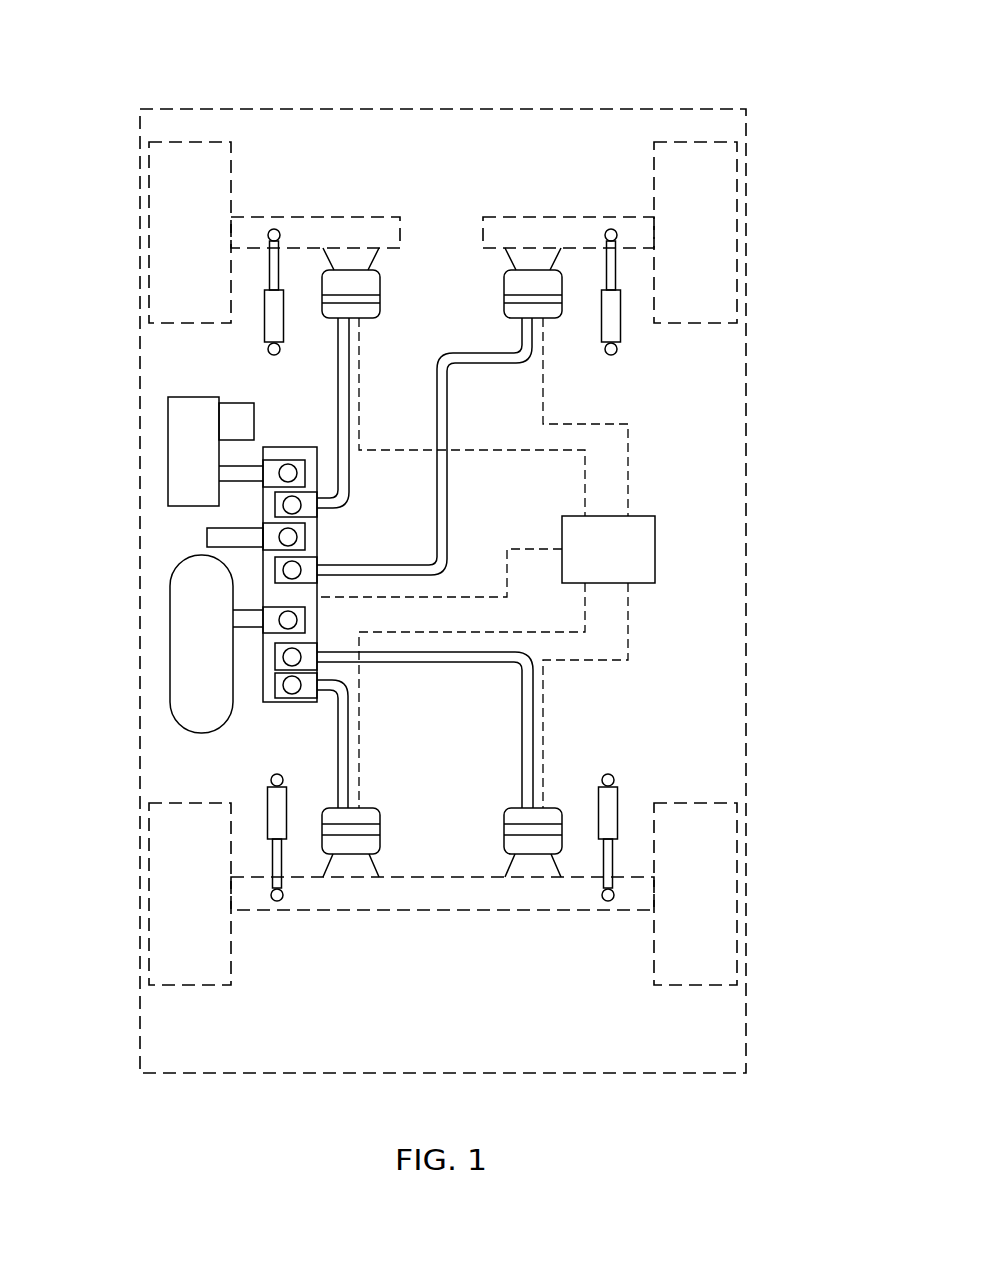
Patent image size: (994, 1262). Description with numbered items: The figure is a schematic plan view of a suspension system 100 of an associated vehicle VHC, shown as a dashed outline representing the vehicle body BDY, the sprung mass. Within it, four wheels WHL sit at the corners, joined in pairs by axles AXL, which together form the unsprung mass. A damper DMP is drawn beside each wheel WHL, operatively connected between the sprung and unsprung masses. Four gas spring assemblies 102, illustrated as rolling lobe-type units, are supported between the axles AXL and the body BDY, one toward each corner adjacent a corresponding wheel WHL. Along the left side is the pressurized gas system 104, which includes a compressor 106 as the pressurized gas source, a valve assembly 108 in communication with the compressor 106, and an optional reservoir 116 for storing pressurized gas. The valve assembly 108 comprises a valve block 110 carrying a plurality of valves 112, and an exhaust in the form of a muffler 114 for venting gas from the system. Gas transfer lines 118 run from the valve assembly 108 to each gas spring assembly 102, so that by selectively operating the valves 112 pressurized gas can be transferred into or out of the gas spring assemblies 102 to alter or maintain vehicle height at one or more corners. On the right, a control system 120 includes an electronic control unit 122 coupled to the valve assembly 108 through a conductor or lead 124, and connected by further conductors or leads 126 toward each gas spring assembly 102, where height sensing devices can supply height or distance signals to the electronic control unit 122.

The suspension system 100 is at (732, 396).
The gas spring assemblies 102 is at (490, 297).
The pressurized gas system 104 is at (138, 515).
The compressor 106 is at (187, 425).
The valve assembly 108 is at (300, 436).
The valve block 110 is at (288, 703).
The valves 112 is at (302, 569).
The muffler 114 is at (206, 537).
The reservoir 116 is at (202, 665).
The gas transfer lines 118 is at (437, 415).
The control system 120 is at (657, 481).
The electronic control unit 122 is at (625, 562).
The conductor or lead 124 is at (541, 548).
The conductors or leads 126 is at (497, 449).
The vehicle VHC is at (737, 80).
The vehicle body BDY is at (563, 108).
The wheel WHL is at (168, 200).
The axle AXL is at (316, 232).
The dampers DMP is at (264, 330).